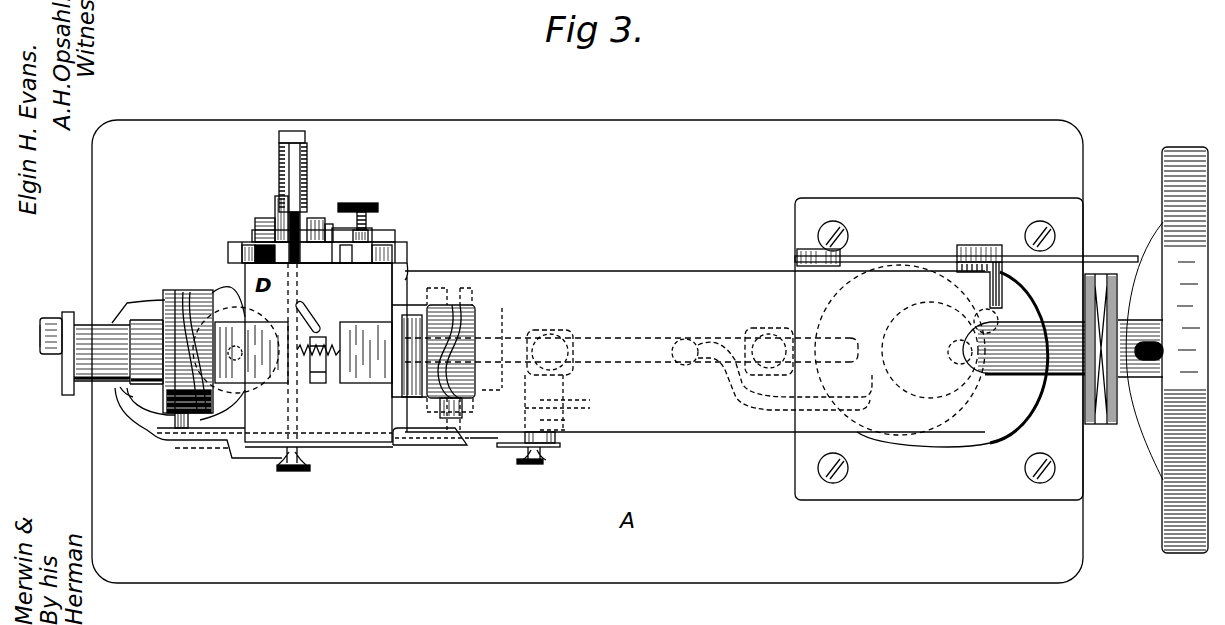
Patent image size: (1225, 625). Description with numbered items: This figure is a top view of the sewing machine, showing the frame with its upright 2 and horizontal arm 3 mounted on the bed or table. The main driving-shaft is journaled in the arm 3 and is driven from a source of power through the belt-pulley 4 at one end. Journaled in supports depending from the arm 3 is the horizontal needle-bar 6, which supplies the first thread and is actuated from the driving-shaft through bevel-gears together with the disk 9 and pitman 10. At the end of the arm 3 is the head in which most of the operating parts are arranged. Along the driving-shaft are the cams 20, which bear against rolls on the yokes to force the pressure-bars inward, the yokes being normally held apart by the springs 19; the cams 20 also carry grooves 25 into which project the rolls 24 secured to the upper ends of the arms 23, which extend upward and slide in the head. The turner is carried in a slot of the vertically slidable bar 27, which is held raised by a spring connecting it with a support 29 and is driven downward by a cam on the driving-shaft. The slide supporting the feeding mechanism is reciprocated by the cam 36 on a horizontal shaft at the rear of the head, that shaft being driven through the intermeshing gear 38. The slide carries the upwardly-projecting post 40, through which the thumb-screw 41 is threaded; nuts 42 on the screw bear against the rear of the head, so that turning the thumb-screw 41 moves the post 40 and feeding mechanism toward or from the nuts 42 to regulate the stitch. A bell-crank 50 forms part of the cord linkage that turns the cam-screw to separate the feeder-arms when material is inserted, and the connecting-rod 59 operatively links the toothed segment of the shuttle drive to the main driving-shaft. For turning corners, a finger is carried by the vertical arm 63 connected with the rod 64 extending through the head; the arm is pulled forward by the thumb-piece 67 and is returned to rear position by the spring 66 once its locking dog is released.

The upright 2 is at (993, 432).
The horizontal arm 3 is at (550, 280).
The belt-pulley 4 is at (1098, 420).
The needle-bar 6 is at (608, 340).
The disk 9 is at (933, 405).
The pitman 10 is at (735, 388).
The springs 19 is at (340, 352).
The cams 20 is at (200, 300).
The arms 23 is at (433, 440).
The rolls 24 is at (468, 407).
The grooves 25 is at (179, 312).
The bar 27 is at (318, 378).
The support 29 is at (315, 311).
The cam 36 is at (343, 257).
The gear 38 is at (255, 220).
The post 40 is at (340, 234).
The thumb-screw 41 is at (379, 205).
The nuts 42 is at (376, 252).
The bell-crank 50 is at (893, 259).
The connecting-rod 59 is at (53, 318).
The vertical arm 63 is at (278, 136).
The rod 64 is at (308, 185).
The spring 66 is at (308, 155).
The thumb-piece 67 is at (310, 469).